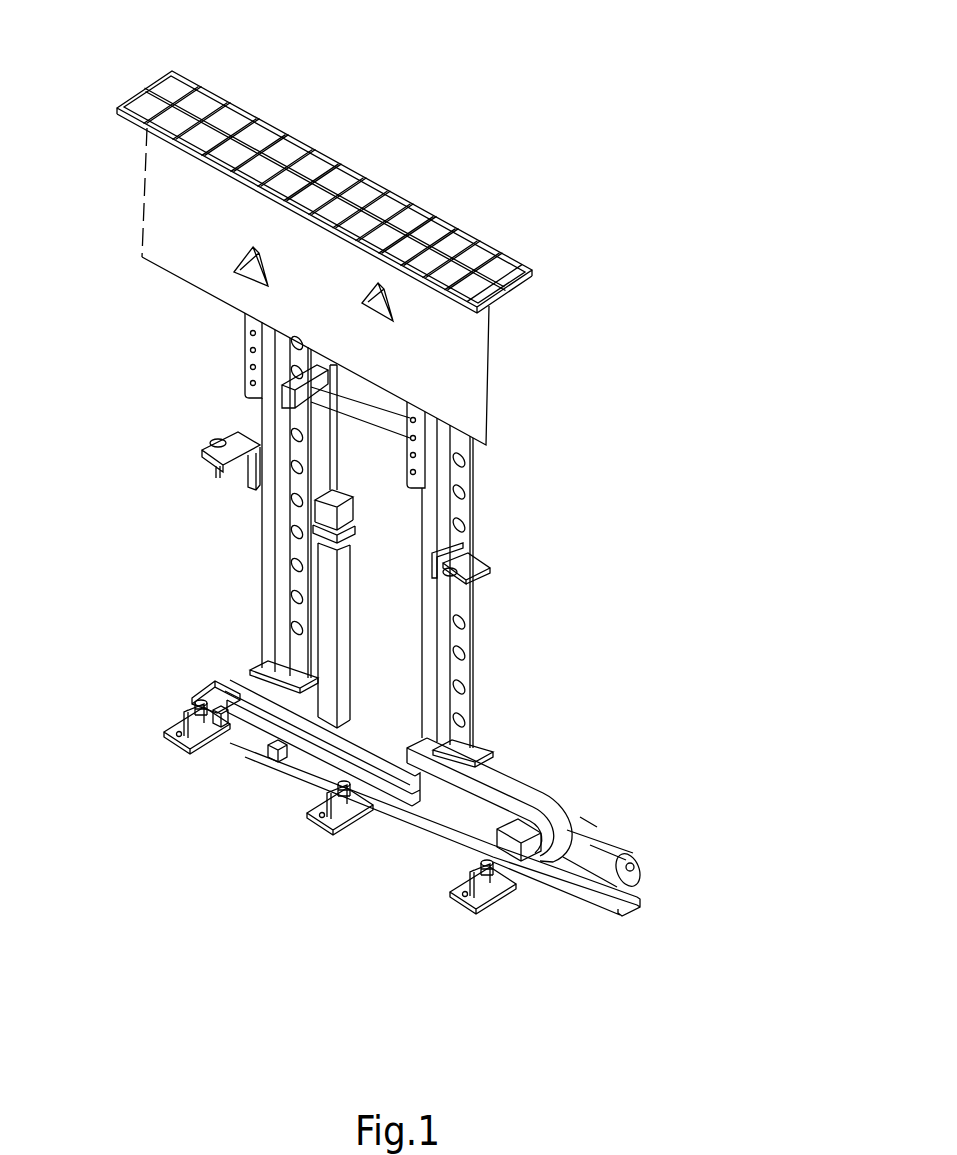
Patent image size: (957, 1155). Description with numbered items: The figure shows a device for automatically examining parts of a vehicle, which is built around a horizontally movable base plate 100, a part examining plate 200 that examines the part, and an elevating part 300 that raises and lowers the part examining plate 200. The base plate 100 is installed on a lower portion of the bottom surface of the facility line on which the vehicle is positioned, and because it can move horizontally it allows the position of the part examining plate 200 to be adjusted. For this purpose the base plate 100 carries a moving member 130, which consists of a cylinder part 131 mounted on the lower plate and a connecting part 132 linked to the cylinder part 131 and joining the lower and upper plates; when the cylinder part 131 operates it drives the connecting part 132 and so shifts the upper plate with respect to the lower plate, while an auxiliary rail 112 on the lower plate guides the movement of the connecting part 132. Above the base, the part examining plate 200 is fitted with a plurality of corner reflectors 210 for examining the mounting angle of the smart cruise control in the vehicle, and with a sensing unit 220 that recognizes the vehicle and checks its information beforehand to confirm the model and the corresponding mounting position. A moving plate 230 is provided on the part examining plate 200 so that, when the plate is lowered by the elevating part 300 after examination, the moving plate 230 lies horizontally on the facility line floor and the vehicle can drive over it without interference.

The base plate 100 is at (257, 746).
The auxiliary rail 112 is at (577, 898).
The moving member 130 is at (727, 772).
The cylinder part 131 is at (612, 850).
The connecting part 132 is at (562, 826).
The part examining plate 200 is at (132, 212).
The corner reflectors 210 is at (237, 270).
The sensing unit 220 is at (158, 176).
The moving plate 230 is at (183, 82).
The elevating part 300 is at (348, 617).